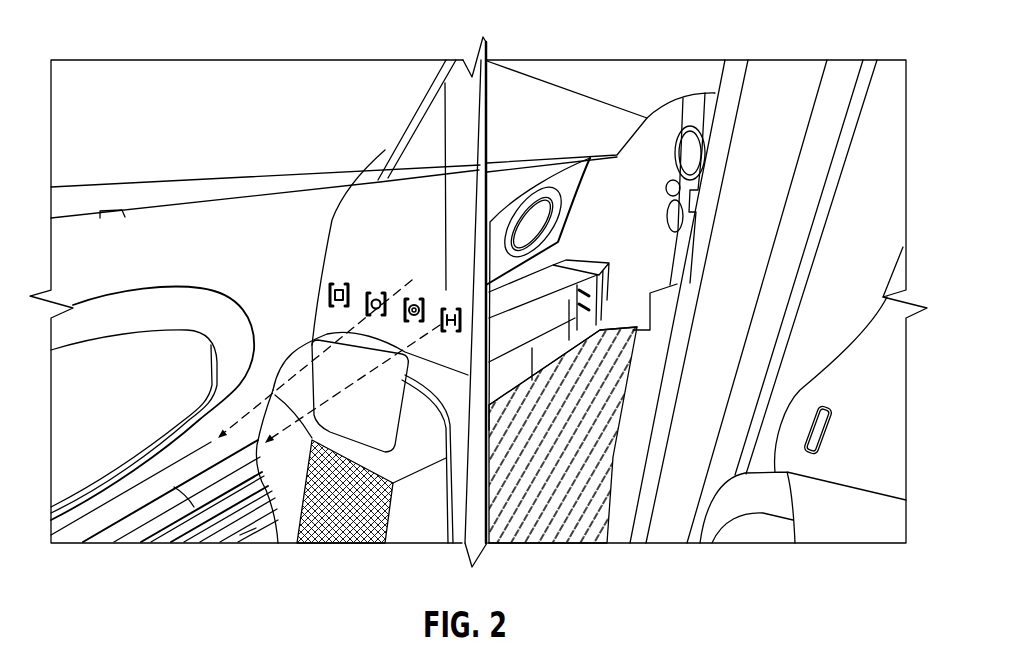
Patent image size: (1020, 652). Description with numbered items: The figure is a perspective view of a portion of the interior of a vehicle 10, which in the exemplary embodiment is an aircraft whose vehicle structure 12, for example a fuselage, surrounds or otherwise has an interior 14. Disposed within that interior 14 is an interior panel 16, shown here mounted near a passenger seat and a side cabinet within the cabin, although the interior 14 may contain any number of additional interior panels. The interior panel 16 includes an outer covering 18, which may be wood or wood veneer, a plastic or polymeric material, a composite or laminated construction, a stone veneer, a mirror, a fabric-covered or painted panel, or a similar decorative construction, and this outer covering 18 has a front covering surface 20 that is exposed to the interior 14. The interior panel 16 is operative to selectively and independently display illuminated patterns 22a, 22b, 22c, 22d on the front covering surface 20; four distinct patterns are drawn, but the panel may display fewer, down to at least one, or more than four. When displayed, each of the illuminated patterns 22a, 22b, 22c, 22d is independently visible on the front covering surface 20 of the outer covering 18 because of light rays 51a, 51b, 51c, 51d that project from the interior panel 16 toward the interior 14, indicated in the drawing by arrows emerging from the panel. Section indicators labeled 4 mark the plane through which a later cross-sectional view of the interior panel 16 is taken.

The vehicle 10 is at (684, 38).
The vehicle structure 12 is at (766, 38).
The interior 14 is at (842, 38).
The interior panel 16 is at (345, 190).
The outer covering 18 is at (393, 200).
The front covering surface 20 is at (343, 233).
The illuminated pattern 22a is at (318, 289).
The illuminated pattern 22b is at (370, 322).
The illuminated pattern 22c is at (410, 296).
The illuminated pattern 22d is at (452, 306).
The section line for FIG. 4 is at (448, 293).
The light ray 51a is at (358, 273).
The light ray 51b is at (222, 412).
The light ray 51c is at (217, 358).
The light ray 51d is at (303, 450).